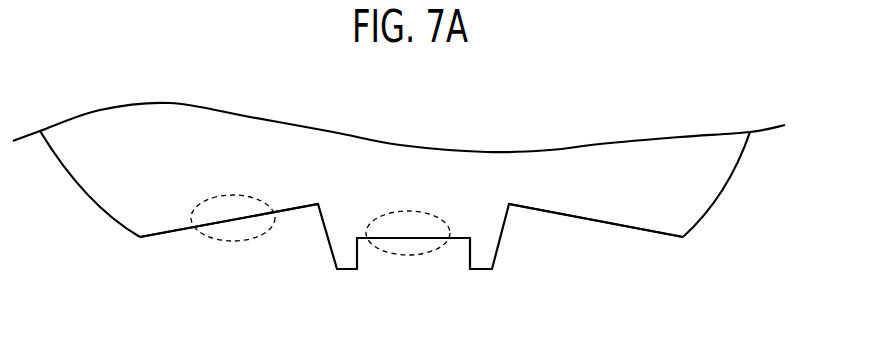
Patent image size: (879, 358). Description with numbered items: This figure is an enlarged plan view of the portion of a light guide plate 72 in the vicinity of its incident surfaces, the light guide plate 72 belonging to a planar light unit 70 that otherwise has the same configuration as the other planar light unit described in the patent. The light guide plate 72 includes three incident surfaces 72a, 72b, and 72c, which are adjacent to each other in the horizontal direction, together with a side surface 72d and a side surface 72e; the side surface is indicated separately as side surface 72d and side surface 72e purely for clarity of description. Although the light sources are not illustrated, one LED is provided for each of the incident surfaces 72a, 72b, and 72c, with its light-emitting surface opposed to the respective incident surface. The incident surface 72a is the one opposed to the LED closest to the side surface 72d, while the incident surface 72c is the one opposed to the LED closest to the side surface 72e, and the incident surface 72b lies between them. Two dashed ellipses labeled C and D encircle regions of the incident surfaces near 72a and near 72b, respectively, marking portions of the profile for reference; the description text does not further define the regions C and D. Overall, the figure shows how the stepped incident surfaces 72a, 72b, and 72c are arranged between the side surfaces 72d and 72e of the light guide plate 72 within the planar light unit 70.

The planar light unit 70 is at (216, 273).
The light guide plate 72 is at (686, 247).
The incident surface 72a is at (240, 222).
The incident surface 72b is at (407, 240).
The incident surface 72c is at (586, 222).
The side surface 72d is at (108, 219).
The side surface 72e is at (733, 172).
The region C is at (231, 195).
The region D is at (403, 208).